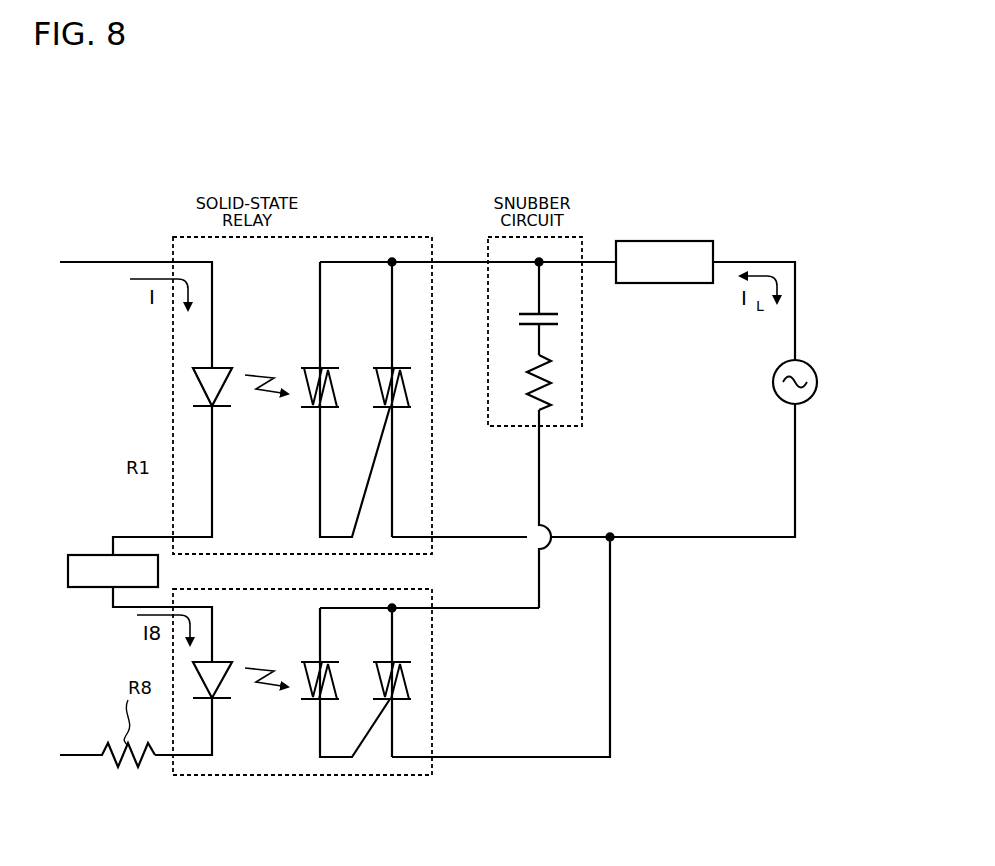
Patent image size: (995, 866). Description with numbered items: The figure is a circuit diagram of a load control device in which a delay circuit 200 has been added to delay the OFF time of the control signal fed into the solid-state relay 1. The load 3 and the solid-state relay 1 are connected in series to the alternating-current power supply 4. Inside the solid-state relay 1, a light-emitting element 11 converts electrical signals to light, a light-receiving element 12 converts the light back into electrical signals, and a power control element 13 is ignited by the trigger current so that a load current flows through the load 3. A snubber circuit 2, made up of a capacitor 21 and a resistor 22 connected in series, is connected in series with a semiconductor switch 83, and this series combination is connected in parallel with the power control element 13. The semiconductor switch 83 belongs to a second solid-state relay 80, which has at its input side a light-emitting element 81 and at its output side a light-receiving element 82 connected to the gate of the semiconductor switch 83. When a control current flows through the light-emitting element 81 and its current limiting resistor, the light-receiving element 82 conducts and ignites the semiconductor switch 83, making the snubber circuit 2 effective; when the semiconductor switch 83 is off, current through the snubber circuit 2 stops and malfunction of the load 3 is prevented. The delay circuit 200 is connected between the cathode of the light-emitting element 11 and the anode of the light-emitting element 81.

The solid-state relay 1 is at (305, 237).
The snubber circuit 2 is at (580, 237).
The load 3 is at (688, 241).
The alternating-current power supply 4 is at (773, 382).
The light-emitting element 11 is at (196, 387).
The light-receiving element 12 is at (305, 368).
The power control element 13 is at (375, 368).
The capacitor 21 is at (559, 318).
The resistor 22 is at (552, 376).
The solid-state relay 80 is at (336, 775).
The light-emitting element 81 is at (230, 690).
The light-receiving element 82 is at (307, 662).
The semiconductor switch 83 is at (379, 662).
The delay circuit 200 is at (158, 568).